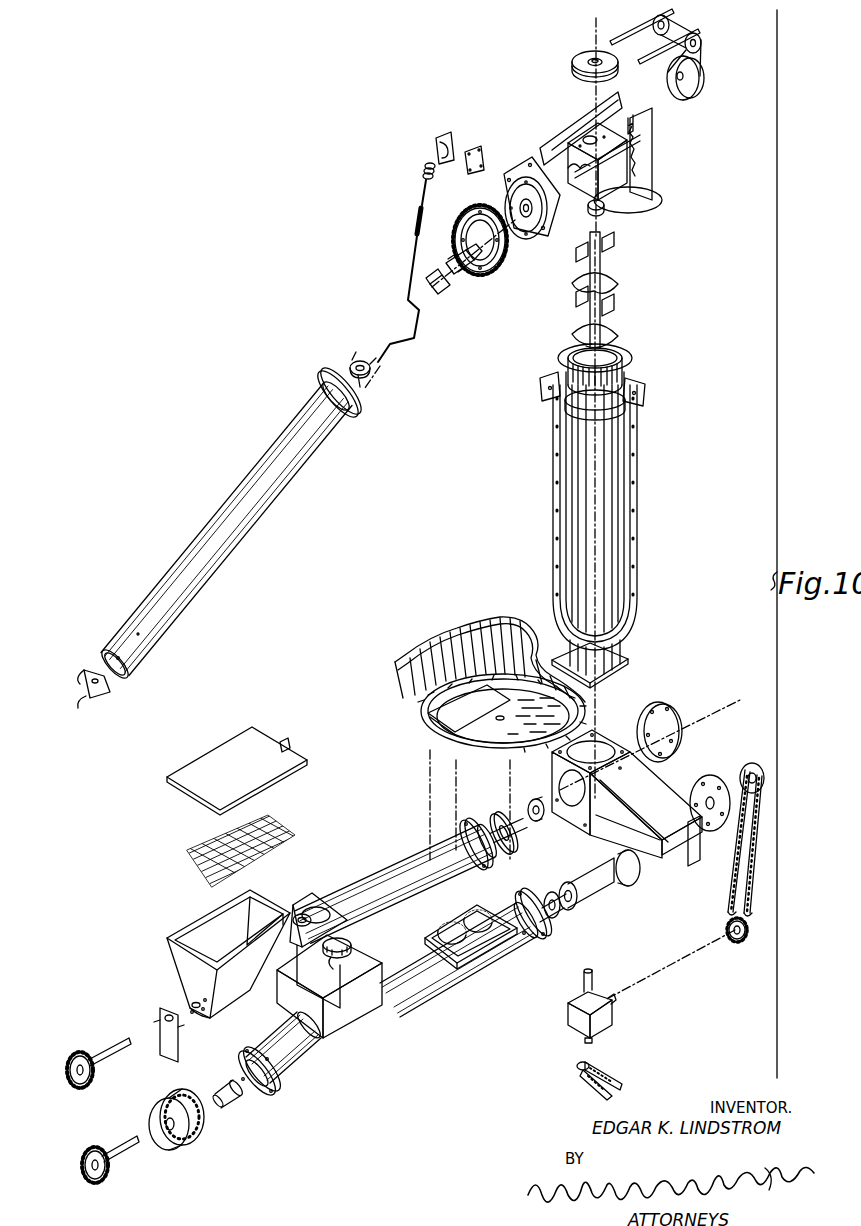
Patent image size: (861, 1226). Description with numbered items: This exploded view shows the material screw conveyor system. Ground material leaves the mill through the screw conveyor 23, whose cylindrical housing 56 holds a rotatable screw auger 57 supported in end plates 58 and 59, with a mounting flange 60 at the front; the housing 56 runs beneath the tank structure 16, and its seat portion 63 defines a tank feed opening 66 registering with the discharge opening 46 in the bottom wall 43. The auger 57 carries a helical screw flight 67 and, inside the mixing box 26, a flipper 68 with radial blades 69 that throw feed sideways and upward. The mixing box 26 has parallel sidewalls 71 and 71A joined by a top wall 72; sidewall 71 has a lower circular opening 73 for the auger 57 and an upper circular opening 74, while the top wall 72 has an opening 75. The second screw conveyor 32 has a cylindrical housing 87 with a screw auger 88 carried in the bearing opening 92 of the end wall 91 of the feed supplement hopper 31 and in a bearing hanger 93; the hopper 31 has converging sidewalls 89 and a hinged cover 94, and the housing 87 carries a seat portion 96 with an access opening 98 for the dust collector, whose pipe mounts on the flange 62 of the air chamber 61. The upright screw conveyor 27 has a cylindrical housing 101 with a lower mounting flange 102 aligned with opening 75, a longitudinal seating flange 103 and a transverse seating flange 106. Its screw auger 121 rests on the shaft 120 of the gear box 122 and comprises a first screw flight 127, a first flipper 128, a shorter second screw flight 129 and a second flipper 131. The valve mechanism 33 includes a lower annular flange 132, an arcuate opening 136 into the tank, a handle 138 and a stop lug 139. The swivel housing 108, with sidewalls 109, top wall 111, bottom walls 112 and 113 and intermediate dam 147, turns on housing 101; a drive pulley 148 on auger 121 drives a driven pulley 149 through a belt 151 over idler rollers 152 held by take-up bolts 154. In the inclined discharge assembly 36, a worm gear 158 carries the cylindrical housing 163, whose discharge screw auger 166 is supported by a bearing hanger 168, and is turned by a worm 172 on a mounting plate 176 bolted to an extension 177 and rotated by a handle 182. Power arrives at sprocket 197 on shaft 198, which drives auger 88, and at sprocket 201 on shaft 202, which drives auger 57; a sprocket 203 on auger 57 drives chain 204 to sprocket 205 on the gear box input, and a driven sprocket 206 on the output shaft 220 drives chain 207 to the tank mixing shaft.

The tank structure 16 is at (454, 738).
The screw conveyor 23 is at (447, 1002).
The mixing box 26 is at (688, 754).
The upright screw conveyor 27 is at (597, 520).
The feed supplement supply hopper 31 is at (180, 953).
The second screw conveyor 32 is at (463, 913).
The valve mechanism 33 is at (592, 398).
The delivery tube assembly 36 is at (277, 402).
The bottom wall 43 is at (482, 746).
The discharge opening 46 is at (426, 722).
The cylindrical housing 56 is at (296, 1070).
The screw auger 57 is at (240, 1106).
The support plate 58 is at (184, 1136).
The end plate 59 is at (730, 788).
The mounting flange 60 is at (269, 1094).
The air chamber 61 is at (337, 1001).
The flange 62 is at (352, 932).
The seat portion 63 is at (427, 934).
The tank feed opening 66 is at (472, 912).
The helical screw flight 67 is at (554, 890).
The flipper 68 is at (612, 912).
The radial blades 69 is at (572, 904).
The sidewall 71 is at (626, 809).
The sidewall 71A is at (686, 854).
The top wall 72 is at (646, 805).
The circular opening 73 is at (634, 882).
The circular opening 74 is at (562, 784).
The circular opening 75 is at (563, 754).
The cylindrical housing 87 is at (388, 871).
The screw auger 88 is at (500, 804).
The downwardly converging sidewalls 89 is at (207, 914).
The end wall structure 91 is at (180, 944).
The bearing opening 92 is at (194, 1002).
The bearing hanger 93 is at (537, 814).
The hinged cover 94 is at (166, 774).
The seat portion 96 is at (306, 933).
The access opening 98 is at (330, 900).
The cylindrical housing 101 is at (616, 517).
The mounting flange 102 is at (635, 654).
The longitudinal seating flange 103 is at (638, 568).
The transverse seating flange 106 is at (632, 363).
The swivel housing 108 is at (623, 140).
The sidewalls 109 is at (582, 108).
The top wall 111 is at (566, 156).
The bottom wall 112 is at (554, 234).
The bottom wall 113 is at (644, 200).
The shaft 120 is at (588, 974).
The screw auger 121 is at (591, 290).
The gear box 122 is at (584, 1010).
The first helical screw flight 127 is at (617, 335).
The first flipper 128 is at (614, 311).
The second helical screw flight 129 is at (618, 265).
The second flipper 131 is at (615, 248).
The lower annular flange member 132 is at (562, 415).
The arcuate opening 136 is at (568, 396).
The handle 138 is at (544, 380).
The stop lug 139 is at (634, 410).
The intermediate wall or dam 147 is at (602, 202).
The drive pulley 148 is at (596, 60).
The driven pulley 149 is at (686, 103).
The drive belt 151 is at (644, 22).
The idler rollers 152 is at (700, 40).
The take-up bolts 154 is at (630, 120).
The worm gear 158 is at (480, 275).
The cylindrical housing 163 is at (268, 454).
The discharge screw auger 166 is at (369, 376).
The bearing hanger 168 is at (88, 672).
The worm 172 is at (426, 168).
The mounting plate 176 is at (455, 108).
The extension 177 is at (528, 152).
The manually rotatable handle 182 is at (410, 260).
The sprocket 197 is at (70, 1068).
The shaft 198 is at (108, 1046).
The sprocket 201 is at (88, 1156).
The shaft 202 is at (116, 1158).
The sprocket 203 is at (754, 768).
The chain 204 is at (758, 844).
The sprocket 205 is at (736, 942).
The driven sprocket 206 is at (578, 1064).
The chain 207 is at (588, 1096).
The output shaft 220 is at (599, 1046).